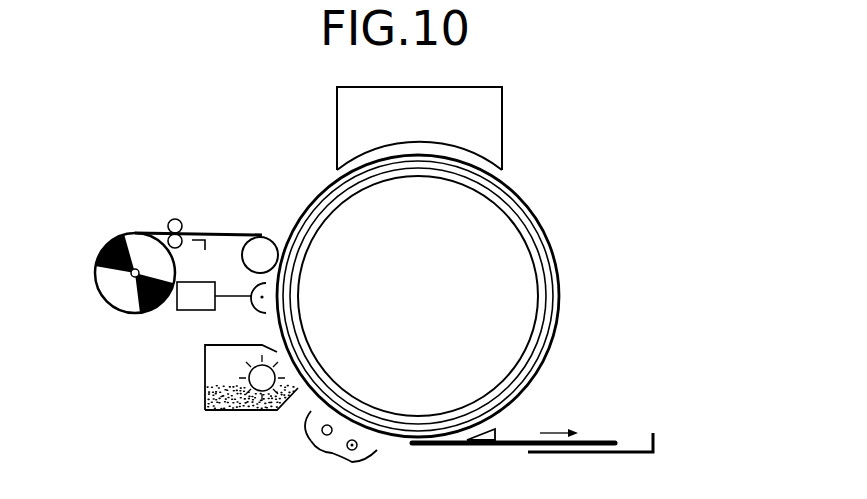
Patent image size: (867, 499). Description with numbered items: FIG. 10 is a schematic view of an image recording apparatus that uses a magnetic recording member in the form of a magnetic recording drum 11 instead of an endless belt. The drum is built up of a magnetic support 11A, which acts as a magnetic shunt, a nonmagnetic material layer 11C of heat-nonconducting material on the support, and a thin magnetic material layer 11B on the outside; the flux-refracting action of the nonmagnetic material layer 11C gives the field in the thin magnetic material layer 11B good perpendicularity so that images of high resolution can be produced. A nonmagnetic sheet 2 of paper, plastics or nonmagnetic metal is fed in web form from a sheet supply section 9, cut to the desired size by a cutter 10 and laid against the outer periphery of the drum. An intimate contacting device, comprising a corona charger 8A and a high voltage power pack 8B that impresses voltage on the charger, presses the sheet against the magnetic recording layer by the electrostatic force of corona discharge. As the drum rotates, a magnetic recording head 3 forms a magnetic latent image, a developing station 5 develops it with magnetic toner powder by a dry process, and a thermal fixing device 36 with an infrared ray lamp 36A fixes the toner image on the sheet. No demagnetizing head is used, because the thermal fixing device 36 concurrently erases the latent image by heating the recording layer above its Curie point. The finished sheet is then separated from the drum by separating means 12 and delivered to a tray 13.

The nonmagnetic sheet 2 is at (239, 232).
The magnetic recording head 3 is at (503, 132).
The developing station 5 is at (205, 384).
The corona charger 8A is at (258, 313).
The high voltage power pack 8B is at (177, 307).
The sheet supply section 9 is at (95, 283).
The cutter 10 is at (206, 224).
The magnetic recording drum 11 is at (426, 228).
The magnetic support 11A is at (531, 242).
The thin magnetic material layer 11B is at (521, 194).
The nonmagnetic material layer 11C is at (552, 254).
The separating means 12 is at (498, 432).
The tray 13 is at (610, 452).
The thermal fixing device 36 is at (296, 436).
The infrared ray lamp 36A is at (337, 452).